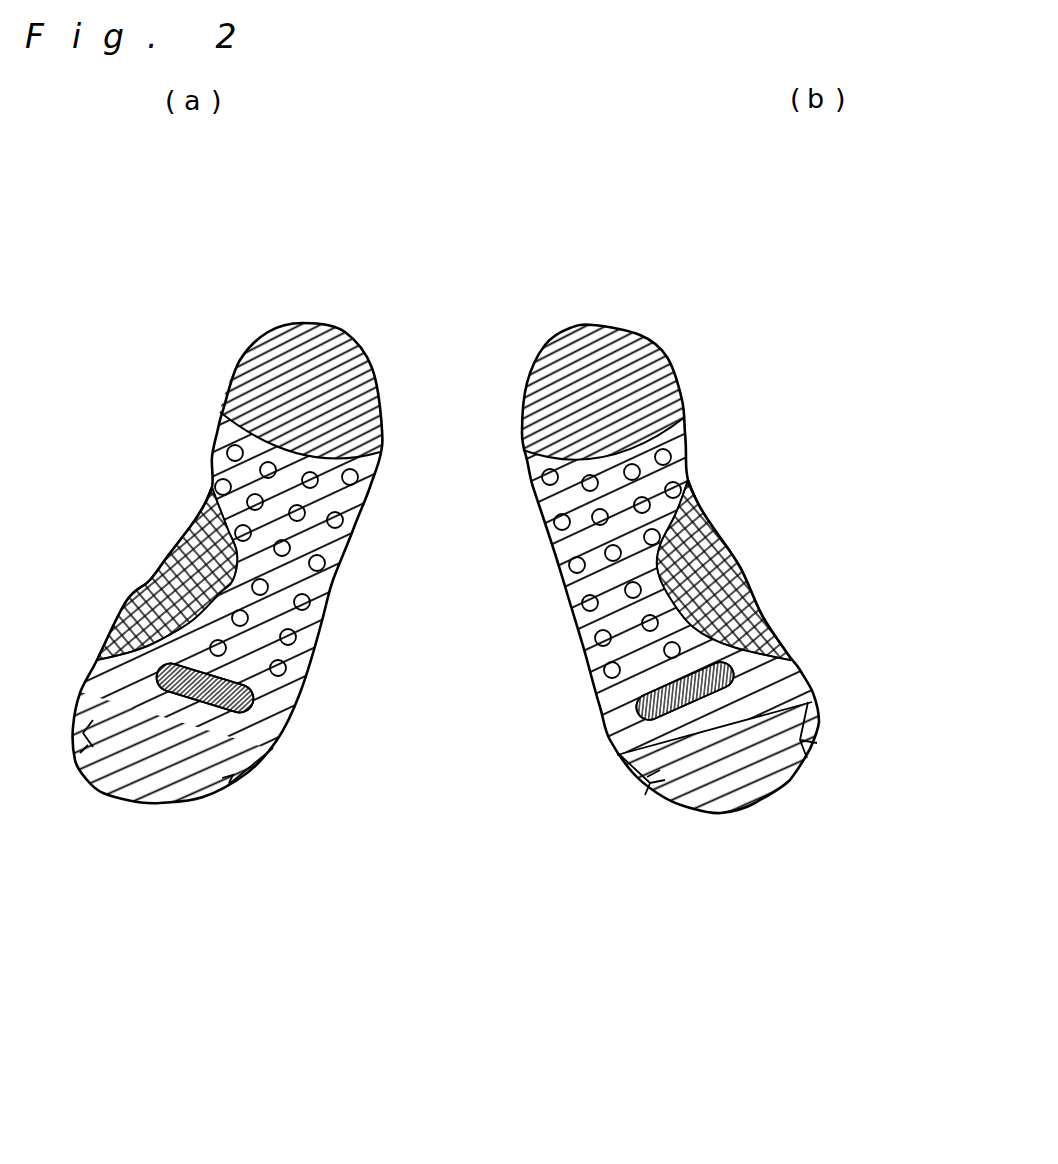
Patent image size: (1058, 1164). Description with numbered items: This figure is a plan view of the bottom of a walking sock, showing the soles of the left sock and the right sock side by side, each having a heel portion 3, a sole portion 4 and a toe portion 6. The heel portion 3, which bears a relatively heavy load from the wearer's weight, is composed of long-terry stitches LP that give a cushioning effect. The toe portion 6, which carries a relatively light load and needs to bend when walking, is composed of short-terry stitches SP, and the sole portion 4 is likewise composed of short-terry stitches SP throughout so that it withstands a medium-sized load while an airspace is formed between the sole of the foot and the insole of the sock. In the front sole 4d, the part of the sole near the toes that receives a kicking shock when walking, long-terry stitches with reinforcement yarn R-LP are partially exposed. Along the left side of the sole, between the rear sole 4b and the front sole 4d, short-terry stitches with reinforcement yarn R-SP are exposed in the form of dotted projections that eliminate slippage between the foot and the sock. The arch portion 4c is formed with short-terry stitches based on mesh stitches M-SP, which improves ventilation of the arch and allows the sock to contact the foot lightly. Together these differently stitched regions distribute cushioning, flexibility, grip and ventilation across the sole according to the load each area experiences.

The heel portion 3 is at (314, 339).
The long-terry stitches LP is at (350, 350).
The sole portion 4 is at (318, 545).
The rear sole 4b is at (355, 459).
The arch portion 4c is at (177, 567).
The mesh stitches M-SP is at (148, 609).
The short-terry stitches SP is at (302, 618).
The short-terry stitches with reinforcement yarn R-SP is at (284, 673).
The long-terry stitches with reinforcement yarn R-LP is at (82, 693).
The front sole 4d is at (258, 735).
The toe portion 6 is at (128, 782).